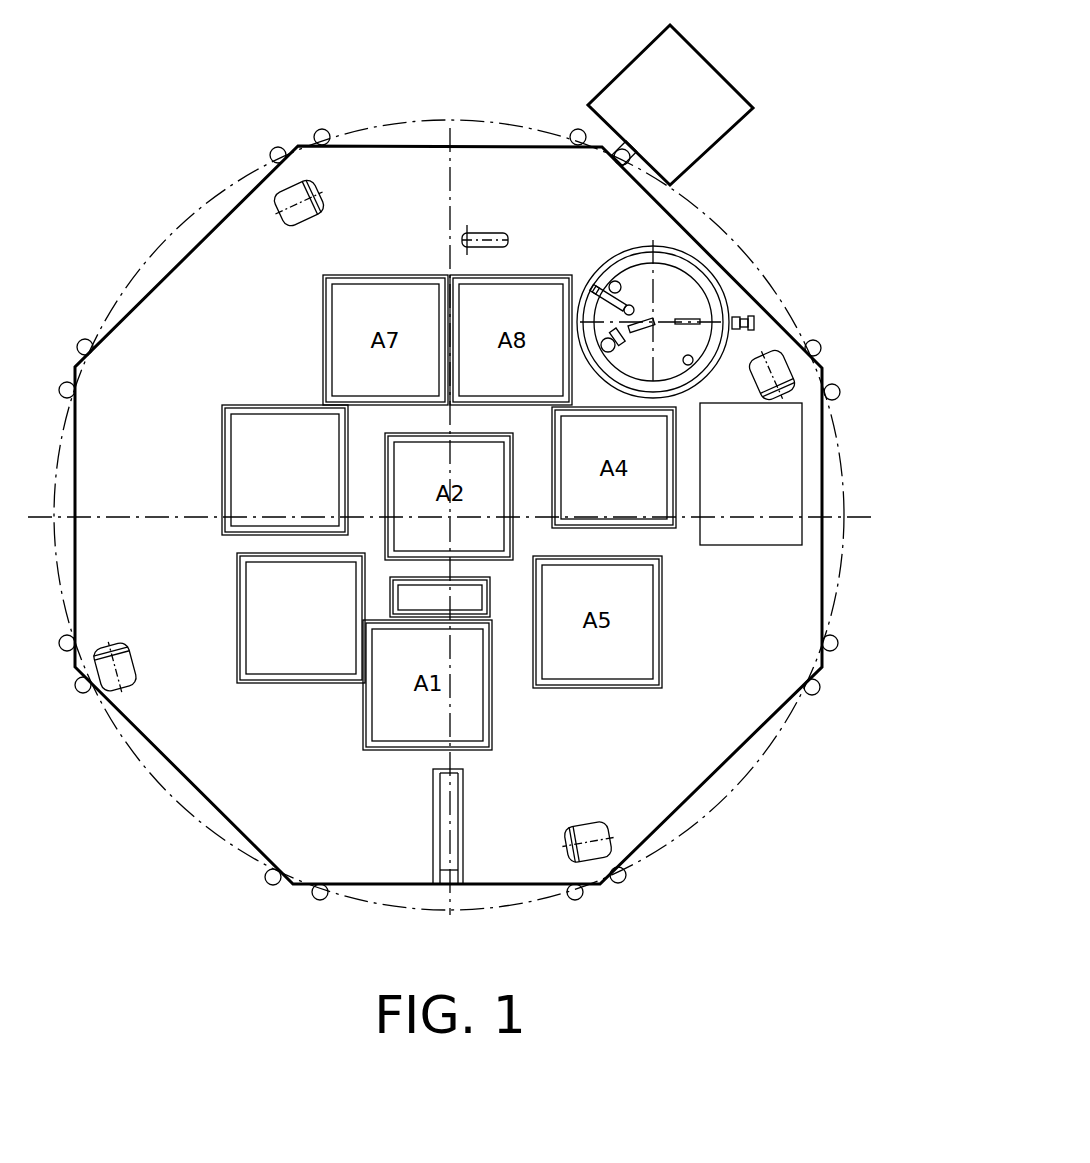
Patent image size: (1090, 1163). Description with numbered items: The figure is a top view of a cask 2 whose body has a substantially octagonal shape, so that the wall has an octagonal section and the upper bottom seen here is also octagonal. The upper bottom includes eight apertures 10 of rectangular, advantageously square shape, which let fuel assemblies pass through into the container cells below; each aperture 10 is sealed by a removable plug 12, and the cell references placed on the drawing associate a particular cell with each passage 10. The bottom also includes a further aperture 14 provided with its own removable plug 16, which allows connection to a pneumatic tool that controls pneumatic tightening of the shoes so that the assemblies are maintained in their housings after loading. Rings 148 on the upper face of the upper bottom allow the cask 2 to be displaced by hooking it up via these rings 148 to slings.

The cask 2 is at (752, 823).
The aperture 10 is at (222, 475).
The removable plug 12 is at (268, 428).
The aperture 14 is at (392, 597).
The removable plug 16 is at (477, 597).
The ring 148 is at (112, 680).